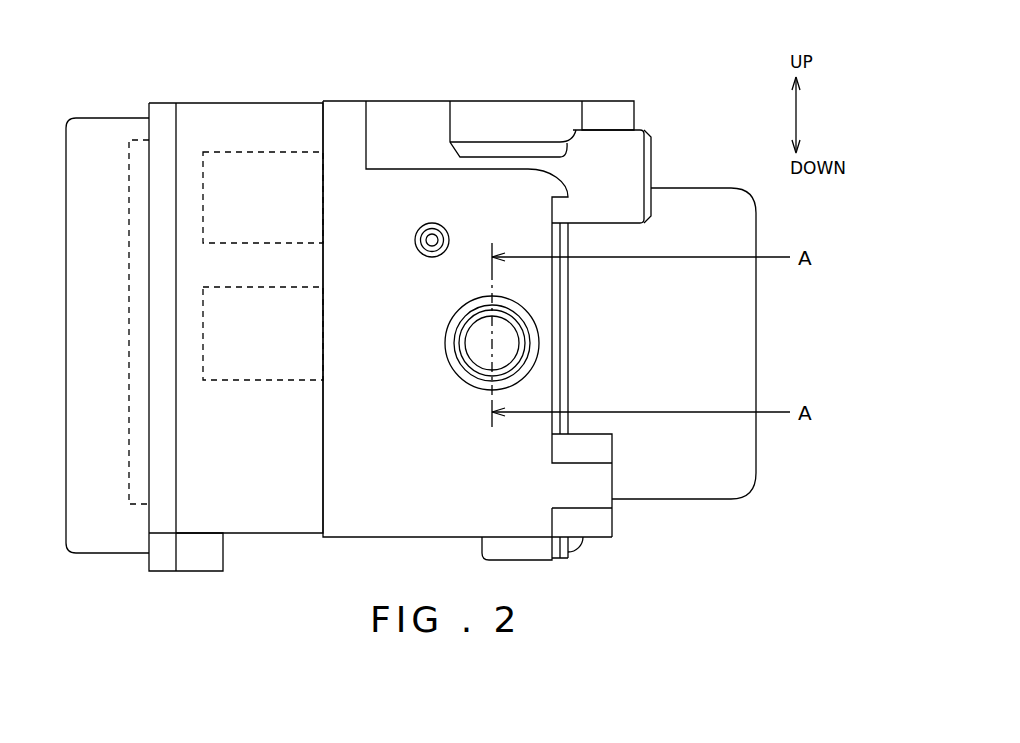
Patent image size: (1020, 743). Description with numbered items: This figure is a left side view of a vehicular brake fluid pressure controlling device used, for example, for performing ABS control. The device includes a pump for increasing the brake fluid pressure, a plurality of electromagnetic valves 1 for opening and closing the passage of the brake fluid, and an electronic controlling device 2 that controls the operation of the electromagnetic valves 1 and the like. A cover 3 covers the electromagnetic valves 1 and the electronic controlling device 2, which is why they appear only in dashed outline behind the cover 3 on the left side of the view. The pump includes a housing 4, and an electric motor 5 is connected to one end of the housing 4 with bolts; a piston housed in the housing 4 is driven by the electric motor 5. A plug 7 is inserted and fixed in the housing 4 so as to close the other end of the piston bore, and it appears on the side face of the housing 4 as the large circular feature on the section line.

The electromagnetic valves 1 is at (289, 150).
The electronic controlling device 2 is at (128, 175).
The cover 3 is at (203, 128).
The housing 4 is at (467, 200).
The electric motor 5 is at (690, 212).
The plug 7 is at (477, 343).